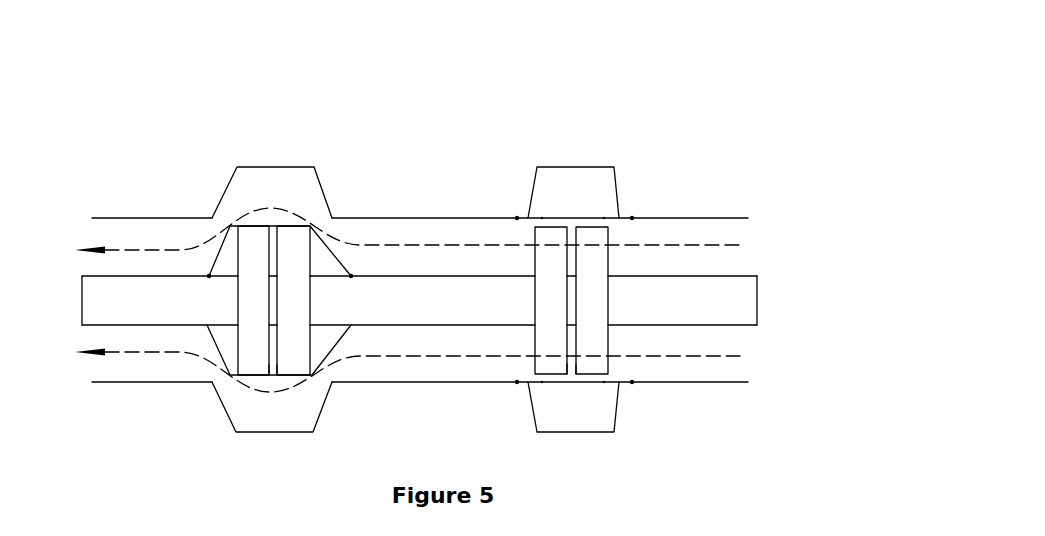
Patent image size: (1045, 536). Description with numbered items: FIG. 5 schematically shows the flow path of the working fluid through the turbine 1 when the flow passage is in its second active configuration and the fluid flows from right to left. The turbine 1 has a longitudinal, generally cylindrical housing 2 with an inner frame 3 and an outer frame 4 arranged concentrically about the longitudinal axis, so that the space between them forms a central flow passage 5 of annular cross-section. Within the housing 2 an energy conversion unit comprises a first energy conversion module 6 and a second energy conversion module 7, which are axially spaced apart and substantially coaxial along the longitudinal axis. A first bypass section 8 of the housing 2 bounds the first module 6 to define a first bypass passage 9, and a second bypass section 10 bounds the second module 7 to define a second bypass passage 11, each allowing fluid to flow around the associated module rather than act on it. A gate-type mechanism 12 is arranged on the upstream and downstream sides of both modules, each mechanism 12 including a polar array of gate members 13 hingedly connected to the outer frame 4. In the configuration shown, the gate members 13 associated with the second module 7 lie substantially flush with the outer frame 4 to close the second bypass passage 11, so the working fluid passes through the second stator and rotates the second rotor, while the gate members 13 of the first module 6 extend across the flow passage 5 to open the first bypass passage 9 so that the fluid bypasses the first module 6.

The turbine 1 is at (641, 75).
The housing 2 is at (435, 218).
The inner frame 3 is at (82, 276).
The outer frame 4 is at (103, 382).
The central flow passage 5 is at (410, 272).
The first energy conversion module 6 is at (273, 232).
The second energy conversion module 7 is at (559, 227).
The first bypass section 8 is at (237, 167).
The first bypass passage 9 is at (245, 194).
The second bypass section 10 is at (597, 167).
The second bypass passage 11 is at (580, 199).
The gate-type mechanism 12 is at (274, 372).
The gate member 13 is at (222, 246).